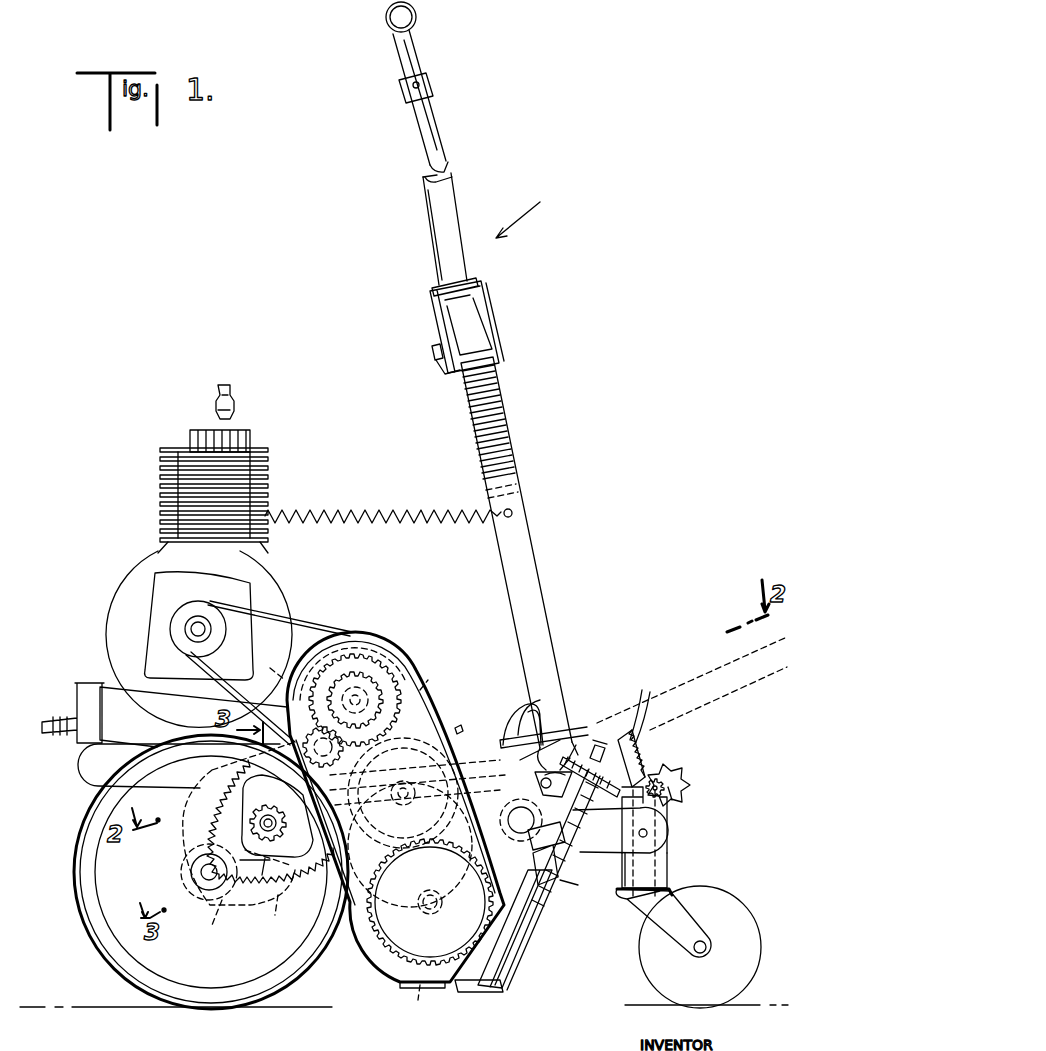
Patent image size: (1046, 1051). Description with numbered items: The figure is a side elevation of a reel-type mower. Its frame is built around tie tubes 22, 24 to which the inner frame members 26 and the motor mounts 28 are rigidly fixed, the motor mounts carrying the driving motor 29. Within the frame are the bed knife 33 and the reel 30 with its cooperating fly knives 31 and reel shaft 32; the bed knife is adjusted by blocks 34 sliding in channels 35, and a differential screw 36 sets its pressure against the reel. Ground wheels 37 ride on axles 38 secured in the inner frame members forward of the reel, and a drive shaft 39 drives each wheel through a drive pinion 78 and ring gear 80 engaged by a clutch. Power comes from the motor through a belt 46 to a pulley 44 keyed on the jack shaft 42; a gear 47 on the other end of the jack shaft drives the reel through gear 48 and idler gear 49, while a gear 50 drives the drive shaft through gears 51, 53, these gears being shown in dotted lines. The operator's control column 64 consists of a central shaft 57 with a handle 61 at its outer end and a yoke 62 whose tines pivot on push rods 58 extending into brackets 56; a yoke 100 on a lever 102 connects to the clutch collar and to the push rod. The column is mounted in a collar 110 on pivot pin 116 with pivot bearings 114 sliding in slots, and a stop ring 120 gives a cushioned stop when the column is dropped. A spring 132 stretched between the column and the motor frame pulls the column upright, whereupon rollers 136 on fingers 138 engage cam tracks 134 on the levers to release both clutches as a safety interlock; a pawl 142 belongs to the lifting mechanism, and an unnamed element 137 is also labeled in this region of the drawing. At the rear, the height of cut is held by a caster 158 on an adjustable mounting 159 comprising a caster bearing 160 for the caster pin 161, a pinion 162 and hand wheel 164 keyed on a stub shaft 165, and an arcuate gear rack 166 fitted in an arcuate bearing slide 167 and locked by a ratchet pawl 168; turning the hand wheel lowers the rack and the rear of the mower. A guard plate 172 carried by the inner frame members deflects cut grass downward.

The tie tube 22 is at (506, 815).
The tie tube 24 is at (410, 845).
The inner frame members 26 is at (212, 912).
The motor mounts 28 is at (78, 765).
The driving motor 29 is at (135, 570).
The reel 30 is at (405, 990).
The fly knives 31 is at (420, 1008).
The reel shaft 32 is at (440, 908).
The bed knife 33 is at (465, 992).
The blocks 34 is at (520, 934).
The channels 35 is at (548, 897).
The differential screw 36 is at (558, 862).
The ground wheels 37 is at (75, 878).
The axles 38 is at (200, 874).
The drive shaft 39 is at (258, 822).
The jack shaft 42 is at (405, 655).
The pulley 44 is at (383, 640).
The belt 46 is at (290, 632).
The gear 47 is at (440, 680).
The gear 48 is at (355, 945).
The idler gear 49 is at (452, 745).
The gear 50 is at (267, 660).
The gear 51 is at (239, 786).
The gear 53 is at (200, 832).
The brackets 56 is at (620, 830).
The central shaft 57 is at (422, 182).
The push rods 58 is at (560, 740).
The handle 61 is at (386, 22).
The yoke 62 is at (505, 462).
The control column 64 is at (573, 201).
The drive pinion 78 is at (258, 880).
The ring gear 80 is at (290, 868).
The yoke 100 is at (284, 915).
The lever 102 is at (456, 721).
The collar 110 is at (438, 305).
The pivot bearings 114 is at (440, 365).
The pivot pin 116 is at (432, 352).
The stop ring 120 is at (432, 283).
The spring 132 is at (344, 505).
The cam tracks 134 is at (490, 763).
The rollers 136 is at (512, 730).
The link 137 is at (575, 740).
The fingers 138 is at (522, 700).
The pawl 142 is at (597, 745).
The caster 158 is at (740, 910).
The adjustable mounting 159 is at (708, 823).
The caster bearing 160 is at (668, 850).
The caster pin 161 is at (667, 870).
The pinion 162 is at (670, 794).
The hand wheel 164 is at (680, 770).
The stub shaft 165 is at (685, 775).
The arcuate gear rack 166 is at (644, 703).
The arcuate bearing slide 167 is at (628, 819).
The ratchet pawl 168 is at (645, 766).
The guard plate 172 is at (446, 882).